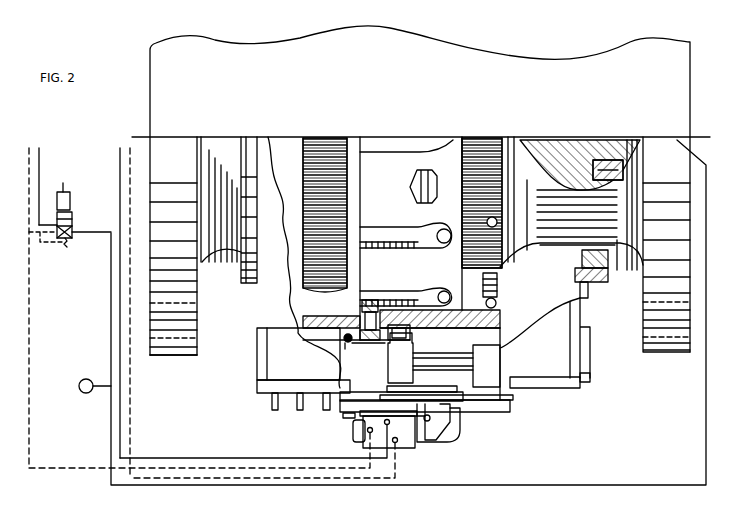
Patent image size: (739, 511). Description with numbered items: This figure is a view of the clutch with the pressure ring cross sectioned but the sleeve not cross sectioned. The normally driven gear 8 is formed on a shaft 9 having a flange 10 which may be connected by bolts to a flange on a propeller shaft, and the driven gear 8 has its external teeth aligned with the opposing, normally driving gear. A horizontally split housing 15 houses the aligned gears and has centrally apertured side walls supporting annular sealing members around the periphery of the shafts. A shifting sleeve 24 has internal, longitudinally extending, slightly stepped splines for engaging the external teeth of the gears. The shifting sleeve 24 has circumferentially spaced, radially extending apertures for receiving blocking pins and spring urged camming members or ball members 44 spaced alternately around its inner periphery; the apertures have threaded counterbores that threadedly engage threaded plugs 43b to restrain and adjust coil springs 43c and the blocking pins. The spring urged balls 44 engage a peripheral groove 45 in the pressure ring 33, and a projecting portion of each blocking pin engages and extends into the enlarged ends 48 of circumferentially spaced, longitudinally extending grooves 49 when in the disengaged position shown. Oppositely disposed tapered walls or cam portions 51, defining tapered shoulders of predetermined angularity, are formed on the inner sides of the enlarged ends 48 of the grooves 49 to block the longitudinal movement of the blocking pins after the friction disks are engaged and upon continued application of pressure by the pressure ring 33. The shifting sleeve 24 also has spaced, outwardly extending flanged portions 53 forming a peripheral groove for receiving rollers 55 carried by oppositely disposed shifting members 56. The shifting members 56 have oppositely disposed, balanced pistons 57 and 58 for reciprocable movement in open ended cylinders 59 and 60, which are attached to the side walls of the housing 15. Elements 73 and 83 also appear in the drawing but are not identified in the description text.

The gear 8 is at (304, 262).
The shaft 9 is at (207, 256).
The flange 10 is at (197, 346).
The housing 15 is at (568, 388).
The shifting sleeve 24 is at (500, 318).
The pressure ring 33 is at (392, 189).
The threaded plug 43b is at (345, 346).
The coil spring 43c is at (344, 338).
The spring urged camming member or ball member 44 is at (363, 314).
The peripheral groove 45 is at (437, 188).
The enlarged end 48 is at (453, 226).
The groove 49 is at (386, 228).
The tapered wall or cam portion 51 is at (420, 153).
The flanged portion 53 is at (447, 328).
The roller 55 is at (399, 333).
The shifting member 56 is at (408, 365).
The piston 57 is at (460, 367).
The piston 58 is at (338, 356).
The cylinder 59 is at (342, 378).
The cylinder 60 is at (487, 349).
The plate 73 is at (422, 381).
The actuator bracket 83 is at (445, 443).